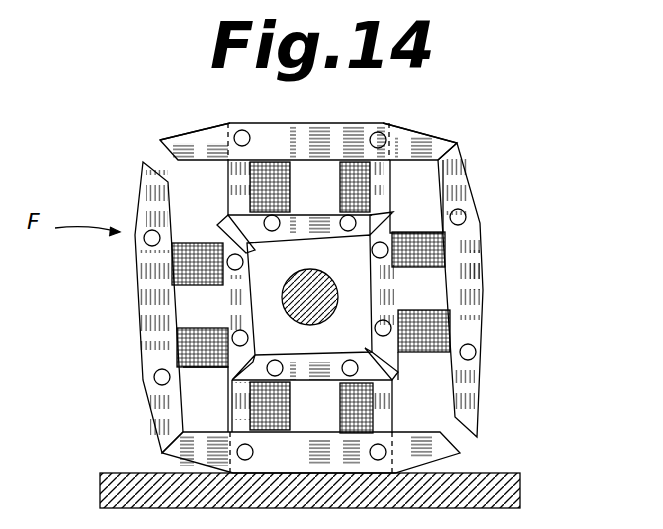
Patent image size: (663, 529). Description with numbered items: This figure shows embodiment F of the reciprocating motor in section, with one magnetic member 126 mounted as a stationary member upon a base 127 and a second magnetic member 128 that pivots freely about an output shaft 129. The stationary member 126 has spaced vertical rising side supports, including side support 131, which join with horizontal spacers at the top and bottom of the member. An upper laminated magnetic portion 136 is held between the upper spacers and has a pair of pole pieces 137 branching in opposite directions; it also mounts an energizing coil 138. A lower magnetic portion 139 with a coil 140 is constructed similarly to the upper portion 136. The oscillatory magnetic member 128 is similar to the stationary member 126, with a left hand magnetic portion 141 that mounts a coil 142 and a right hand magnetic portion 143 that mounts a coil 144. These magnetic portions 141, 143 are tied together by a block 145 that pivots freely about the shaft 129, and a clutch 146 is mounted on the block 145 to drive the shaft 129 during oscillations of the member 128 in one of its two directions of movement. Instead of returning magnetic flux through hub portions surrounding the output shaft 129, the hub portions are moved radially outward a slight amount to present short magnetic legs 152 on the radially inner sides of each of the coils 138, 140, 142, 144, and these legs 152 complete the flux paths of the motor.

The magnetic member 126 is at (352, 124).
The base 127 is at (520, 482).
The second magnetic member 128 is at (483, 244).
The output shaft 129 is at (330, 282).
The side support 131 is at (228, 173).
The upper laminated magnetic portion 136 is at (310, 172).
The pole pieces 137 is at (197, 143).
The energizing coil 138 is at (378, 195).
The lower magnetic portion 139 is at (313, 460).
The coil 140 is at (367, 413).
The left hand magnetic portion 141 is at (142, 305).
The coil 142 is at (208, 368).
The right hand magnetic portion 143 is at (477, 310).
The coil 144 is at (403, 356).
The block 145 is at (250, 247).
The clutch 146 is at (370, 348).
The short magnetic legs 152 is at (253, 226).